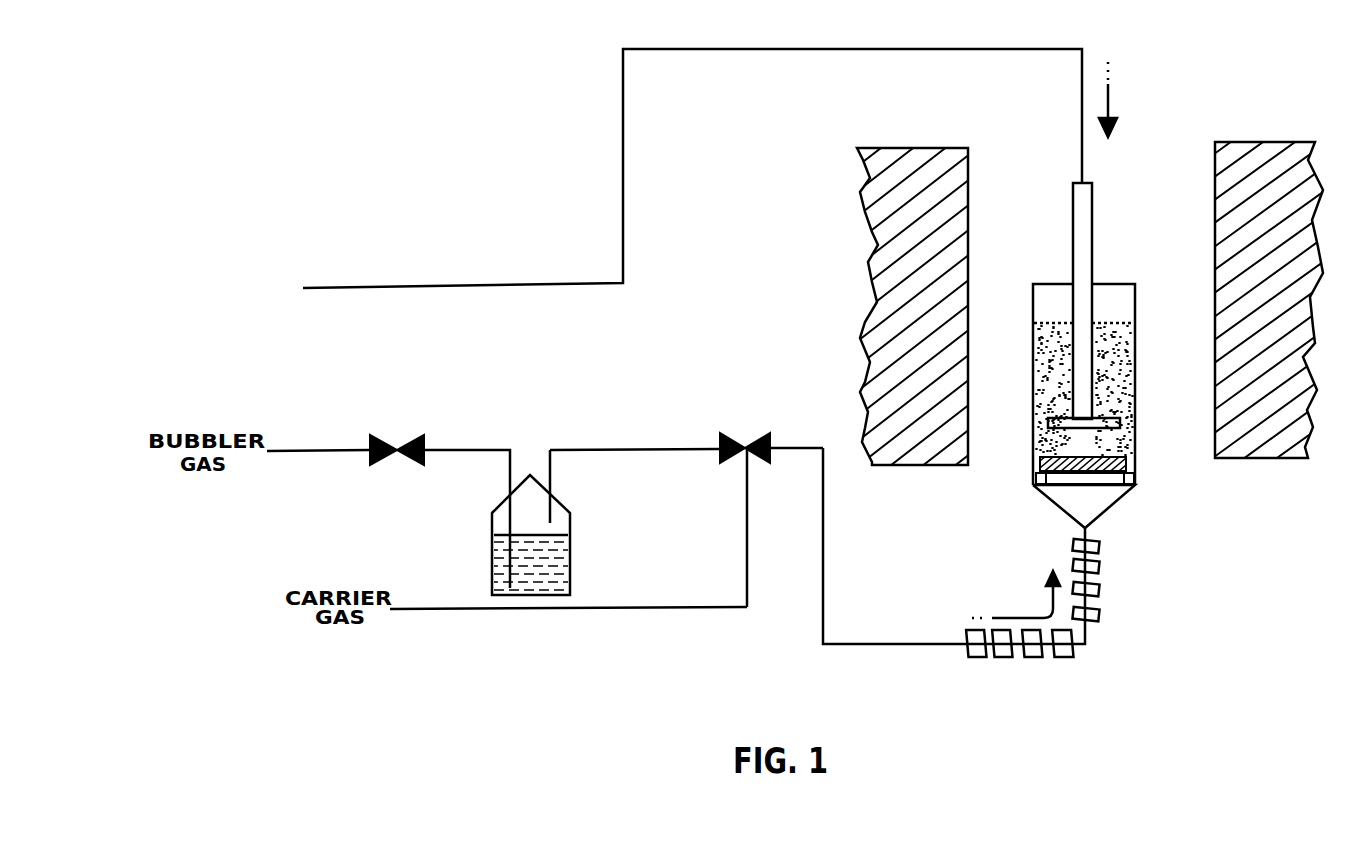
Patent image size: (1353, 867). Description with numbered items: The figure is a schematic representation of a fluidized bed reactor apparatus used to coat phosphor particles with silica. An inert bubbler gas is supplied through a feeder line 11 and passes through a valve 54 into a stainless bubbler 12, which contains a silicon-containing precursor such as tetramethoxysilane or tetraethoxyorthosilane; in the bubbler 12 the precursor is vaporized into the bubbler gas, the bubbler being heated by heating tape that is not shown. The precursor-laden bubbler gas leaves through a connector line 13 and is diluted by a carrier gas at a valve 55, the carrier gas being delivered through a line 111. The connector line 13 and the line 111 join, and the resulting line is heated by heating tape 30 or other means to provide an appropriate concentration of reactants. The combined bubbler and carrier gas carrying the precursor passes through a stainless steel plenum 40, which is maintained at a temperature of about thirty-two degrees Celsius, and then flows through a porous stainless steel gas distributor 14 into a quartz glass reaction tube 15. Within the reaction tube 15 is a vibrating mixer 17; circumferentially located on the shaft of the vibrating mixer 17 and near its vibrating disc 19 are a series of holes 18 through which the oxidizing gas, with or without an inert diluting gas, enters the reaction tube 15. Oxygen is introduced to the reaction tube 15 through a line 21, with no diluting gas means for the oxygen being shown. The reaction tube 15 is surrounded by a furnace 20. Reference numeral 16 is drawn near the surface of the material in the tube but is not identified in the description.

The feeder line 11 is at (478, 452).
The stainless bubbler 12 is at (572, 570).
The connector line 13 is at (688, 450).
The porous stainless steel gas distributor 14 is at (1136, 478).
The quartz glass reaction tube 15 is at (1137, 296).
The powder surface level 16 is at (1031, 334).
The vibrating mixer 17 is at (1088, 236).
The holes 18 is at (1110, 370).
The vibrating disc 19 is at (1137, 432).
The furnace 20 is at (1258, 150).
The line 21 is at (488, 285).
The heating tape 30 is at (1100, 598).
The stainless steel plenum 40 is at (1109, 506).
The valve 54 is at (420, 440).
The valve 55 is at (740, 435).
The carrier gas line 111 is at (563, 609).